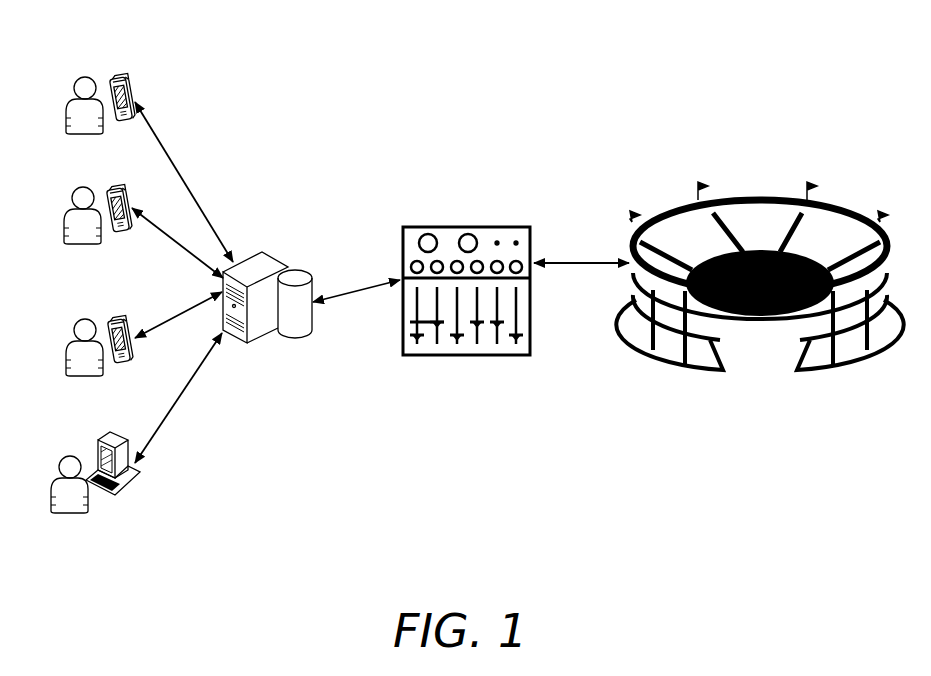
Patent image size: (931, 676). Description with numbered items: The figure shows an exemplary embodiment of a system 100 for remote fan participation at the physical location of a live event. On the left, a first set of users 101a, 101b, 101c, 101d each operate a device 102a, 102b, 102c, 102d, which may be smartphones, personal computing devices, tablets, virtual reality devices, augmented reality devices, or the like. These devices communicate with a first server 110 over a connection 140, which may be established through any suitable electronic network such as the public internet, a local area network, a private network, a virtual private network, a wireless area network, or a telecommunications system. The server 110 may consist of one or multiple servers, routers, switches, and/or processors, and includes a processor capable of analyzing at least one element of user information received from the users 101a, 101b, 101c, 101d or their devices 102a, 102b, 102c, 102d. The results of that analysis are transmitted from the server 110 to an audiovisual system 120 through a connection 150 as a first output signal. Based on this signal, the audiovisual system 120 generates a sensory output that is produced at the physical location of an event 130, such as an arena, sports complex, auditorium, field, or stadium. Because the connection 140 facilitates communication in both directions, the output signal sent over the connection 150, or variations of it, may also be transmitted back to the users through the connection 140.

The system 100 is at (508, 96).
The user 101a is at (72, 135).
The user 101b is at (72, 245).
The user 101c is at (72, 378).
The user 101d is at (60, 514).
The device 102a is at (131, 75).
The device 102b is at (123, 189).
The device 102c is at (120, 319).
The device 102d is at (127, 436).
The first server 110 is at (287, 266).
The audiovisual system 120 is at (484, 221).
The physical location of an event 130 is at (713, 381).
The connection 140 is at (190, 183).
The connection 150 is at (356, 290).